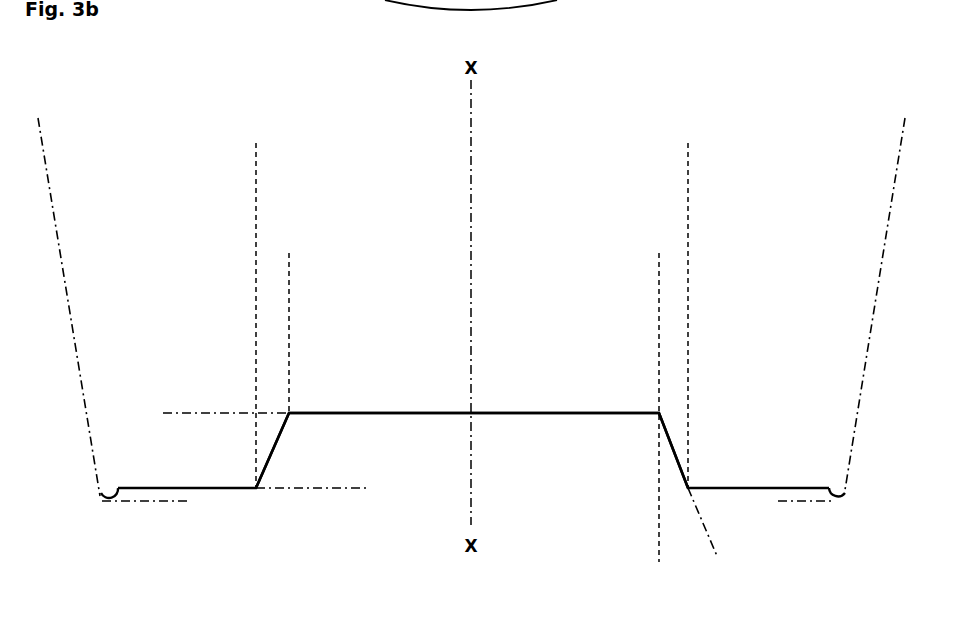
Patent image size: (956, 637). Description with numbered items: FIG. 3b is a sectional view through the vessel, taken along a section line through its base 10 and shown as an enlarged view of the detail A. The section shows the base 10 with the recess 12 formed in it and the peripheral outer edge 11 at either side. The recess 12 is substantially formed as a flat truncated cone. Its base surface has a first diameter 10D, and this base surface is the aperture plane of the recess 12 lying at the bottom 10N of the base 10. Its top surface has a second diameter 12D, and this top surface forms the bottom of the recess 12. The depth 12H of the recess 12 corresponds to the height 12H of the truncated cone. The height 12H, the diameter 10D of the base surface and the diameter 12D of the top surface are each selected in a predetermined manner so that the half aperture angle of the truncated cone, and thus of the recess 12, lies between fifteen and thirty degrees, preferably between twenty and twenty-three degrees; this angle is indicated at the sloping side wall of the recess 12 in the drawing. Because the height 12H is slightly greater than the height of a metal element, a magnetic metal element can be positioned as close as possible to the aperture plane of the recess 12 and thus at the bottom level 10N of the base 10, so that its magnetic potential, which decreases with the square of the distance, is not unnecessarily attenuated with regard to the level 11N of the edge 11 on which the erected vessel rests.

The base 10 is at (195, 235).
The recess 12 is at (392, 455).
The peripheral outer edge 11 is at (103, 500).
The level of the edge 11N is at (187, 501).
The bottom of the base 10N is at (367, 488).
The depth of the recess 12H is at (163, 413).
The first diameter 10D is at (688, 143).
The second diameter 12D is at (659, 253).
The detail A is at (170, 102).